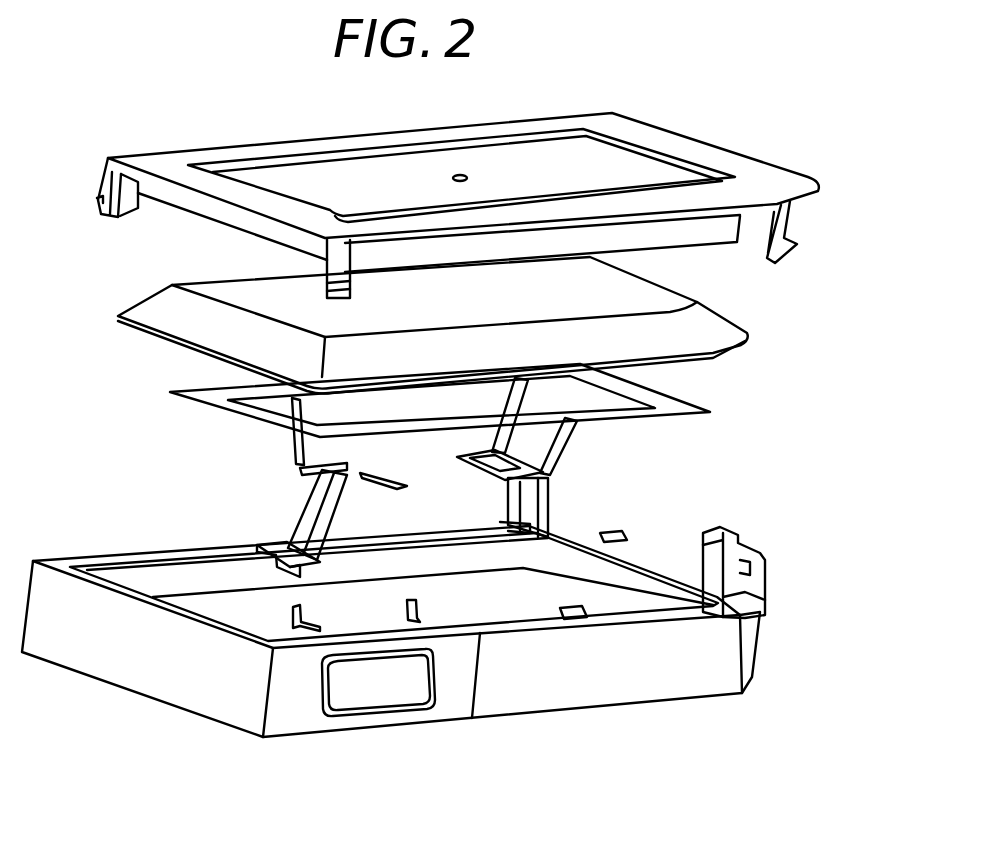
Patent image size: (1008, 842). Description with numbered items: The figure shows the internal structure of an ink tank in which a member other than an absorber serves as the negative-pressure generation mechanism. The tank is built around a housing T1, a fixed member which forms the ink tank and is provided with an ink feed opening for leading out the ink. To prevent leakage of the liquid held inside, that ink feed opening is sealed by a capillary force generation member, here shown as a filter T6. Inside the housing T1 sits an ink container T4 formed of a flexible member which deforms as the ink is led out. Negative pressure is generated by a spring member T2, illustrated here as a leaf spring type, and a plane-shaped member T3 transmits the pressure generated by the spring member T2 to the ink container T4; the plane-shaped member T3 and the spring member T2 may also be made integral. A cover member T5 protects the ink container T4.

The housing T1 is at (725, 660).
The spring member T2 is at (548, 492).
The plane-shaped member T3 is at (698, 405).
The ink container T4 is at (707, 322).
The cover member T5 is at (720, 155).
The filter T6 is at (360, 685).